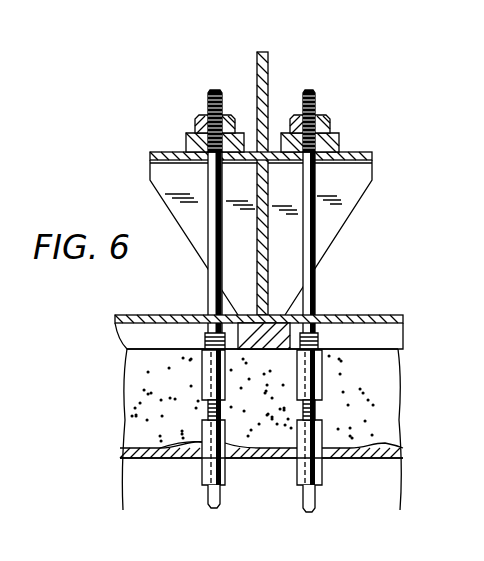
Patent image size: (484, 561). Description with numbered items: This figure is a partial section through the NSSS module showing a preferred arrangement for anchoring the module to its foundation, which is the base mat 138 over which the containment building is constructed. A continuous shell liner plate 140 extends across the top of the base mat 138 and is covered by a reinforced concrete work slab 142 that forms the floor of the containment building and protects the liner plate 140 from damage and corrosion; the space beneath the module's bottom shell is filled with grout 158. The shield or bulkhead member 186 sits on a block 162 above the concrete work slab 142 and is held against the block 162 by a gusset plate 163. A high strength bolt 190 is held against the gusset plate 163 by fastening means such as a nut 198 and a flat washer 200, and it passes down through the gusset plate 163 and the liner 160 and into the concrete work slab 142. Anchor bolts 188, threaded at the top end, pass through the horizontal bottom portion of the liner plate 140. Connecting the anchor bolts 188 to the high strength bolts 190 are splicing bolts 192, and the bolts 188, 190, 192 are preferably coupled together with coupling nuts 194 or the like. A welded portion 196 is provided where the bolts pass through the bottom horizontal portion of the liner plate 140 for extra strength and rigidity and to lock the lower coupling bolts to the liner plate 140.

The base mat 138 is at (280, 525).
The liner plate 140 is at (387, 447).
The concrete work slab 142 is at (163, 398).
The grout 158 is at (380, 348).
The liner 160 is at (357, 315).
The block 162 is at (207, 335).
The gusset plate 163 is at (342, 210).
The shield or bulkhead member 186 is at (268, 62).
The anchor bolt 188 is at (316, 490).
The high strength bolt 190 is at (314, 90).
The splicing bolt 192 is at (208, 412).
The coupling nut 194 is at (328, 445).
The welded portion 196 is at (198, 446).
The nut 198 is at (328, 118).
The flat washer 200 is at (340, 140).